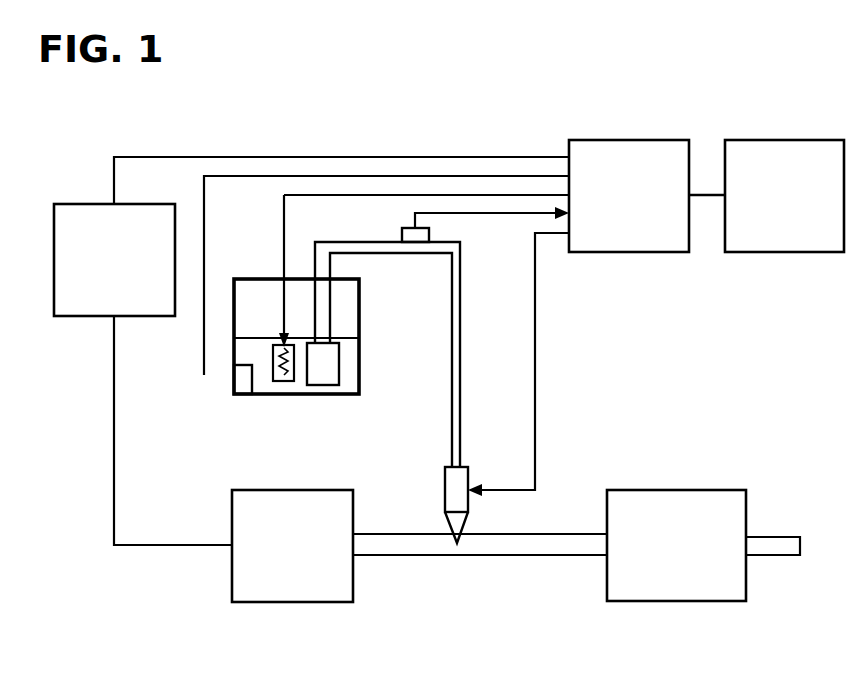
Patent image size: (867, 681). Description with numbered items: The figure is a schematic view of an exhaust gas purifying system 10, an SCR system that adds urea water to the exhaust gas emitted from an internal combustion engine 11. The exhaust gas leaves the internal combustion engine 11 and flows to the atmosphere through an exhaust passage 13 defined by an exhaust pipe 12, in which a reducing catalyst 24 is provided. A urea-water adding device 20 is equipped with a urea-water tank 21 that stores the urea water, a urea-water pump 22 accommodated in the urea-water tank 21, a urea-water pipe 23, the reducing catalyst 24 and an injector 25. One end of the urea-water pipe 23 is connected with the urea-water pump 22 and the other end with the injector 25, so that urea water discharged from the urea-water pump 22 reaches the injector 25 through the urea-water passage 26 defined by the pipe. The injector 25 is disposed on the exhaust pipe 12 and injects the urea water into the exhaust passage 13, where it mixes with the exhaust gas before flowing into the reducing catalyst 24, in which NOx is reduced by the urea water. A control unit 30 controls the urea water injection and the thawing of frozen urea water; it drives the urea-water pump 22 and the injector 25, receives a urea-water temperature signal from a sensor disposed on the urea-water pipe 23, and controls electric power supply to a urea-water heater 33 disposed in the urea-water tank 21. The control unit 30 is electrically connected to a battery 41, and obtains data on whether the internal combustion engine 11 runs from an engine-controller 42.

The exhaust gas purifying system 10 is at (512, 96).
The internal combustion engine 11 is at (291, 603).
The exhaust pipe 12 is at (404, 558).
The exhaust passage 13 is at (513, 558).
The urea-water adding device 20 is at (692, 117).
The urea-water tank 21 is at (360, 307).
The urea-water pump 22 is at (340, 357).
The urea-water pipe 23 is at (461, 289).
The reducing catalyst 24 is at (674, 489).
The injector 25 is at (445, 488).
The urea-water passage 26 is at (455, 395).
The control unit 30 is at (622, 139).
The urea-water heater 33 is at (290, 385).
The battery 41 is at (787, 254).
The engine-controller 42 is at (72, 203).